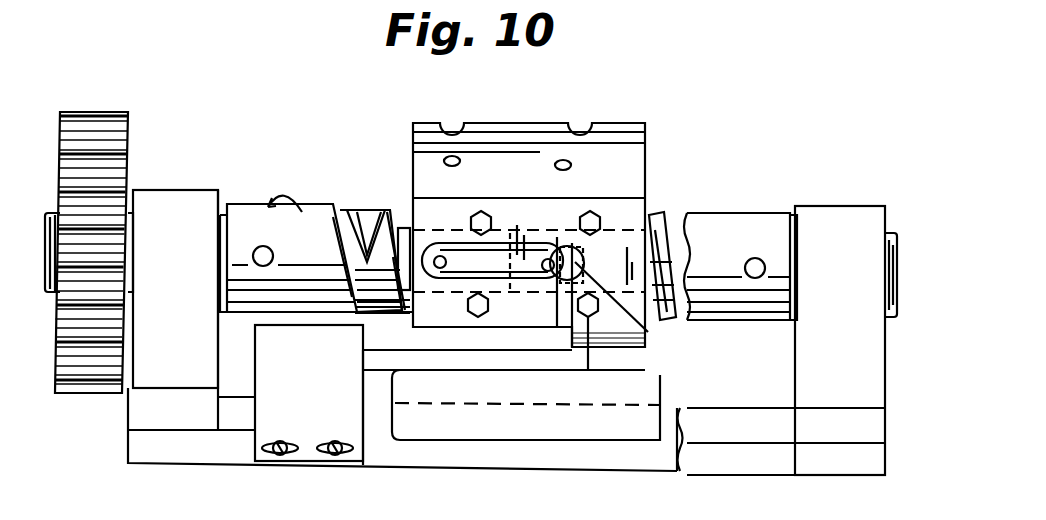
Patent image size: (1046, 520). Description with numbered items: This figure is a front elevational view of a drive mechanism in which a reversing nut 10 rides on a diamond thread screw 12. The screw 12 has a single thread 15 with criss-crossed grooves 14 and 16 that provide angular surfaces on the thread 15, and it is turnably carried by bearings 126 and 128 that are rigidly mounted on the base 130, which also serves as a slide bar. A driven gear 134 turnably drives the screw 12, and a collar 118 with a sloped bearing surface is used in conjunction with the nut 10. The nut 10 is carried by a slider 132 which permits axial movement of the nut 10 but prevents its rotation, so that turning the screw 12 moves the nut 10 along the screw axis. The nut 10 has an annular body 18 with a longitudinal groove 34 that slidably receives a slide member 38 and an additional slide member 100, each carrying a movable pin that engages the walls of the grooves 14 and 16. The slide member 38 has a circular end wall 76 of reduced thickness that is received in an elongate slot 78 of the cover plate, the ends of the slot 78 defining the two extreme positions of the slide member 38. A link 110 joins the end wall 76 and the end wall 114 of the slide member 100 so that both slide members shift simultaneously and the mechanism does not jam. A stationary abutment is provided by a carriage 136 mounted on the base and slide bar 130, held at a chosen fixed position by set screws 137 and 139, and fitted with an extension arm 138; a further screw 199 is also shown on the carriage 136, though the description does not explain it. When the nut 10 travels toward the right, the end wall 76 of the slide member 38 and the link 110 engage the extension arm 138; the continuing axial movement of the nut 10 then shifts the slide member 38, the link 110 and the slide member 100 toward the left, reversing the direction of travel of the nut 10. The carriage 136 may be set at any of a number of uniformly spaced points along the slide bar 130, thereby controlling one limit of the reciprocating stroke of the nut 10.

The reversing nut 10 is at (701, 168).
The diamond thread screw 12 is at (318, 182).
The groove 14 is at (345, 218).
The thread 15 is at (367, 214).
The groove 16 is at (396, 240).
The annular body 18 is at (635, 153).
The longitudinal groove 34 is at (505, 226).
The slide member 38 is at (585, 257).
The circular end wall 76 is at (568, 243).
The elongate slot 78 is at (597, 411).
The slide member 100 is at (403, 228).
The link 110 is at (522, 260).
The end wall 114 is at (465, 237).
The collar 118 is at (243, 204).
The bearing 126 is at (160, 200).
The bearing 128 is at (838, 208).
The base and slide bar 130 is at (543, 463).
The slider 132 is at (655, 392).
The driven gear 134 is at (107, 112).
The carriage 136 is at (338, 375).
The set screw 137 is at (280, 441).
The extension arm 138 is at (648, 332).
The set screw 139 is at (548, 272).
The screw 199 is at (333, 441).